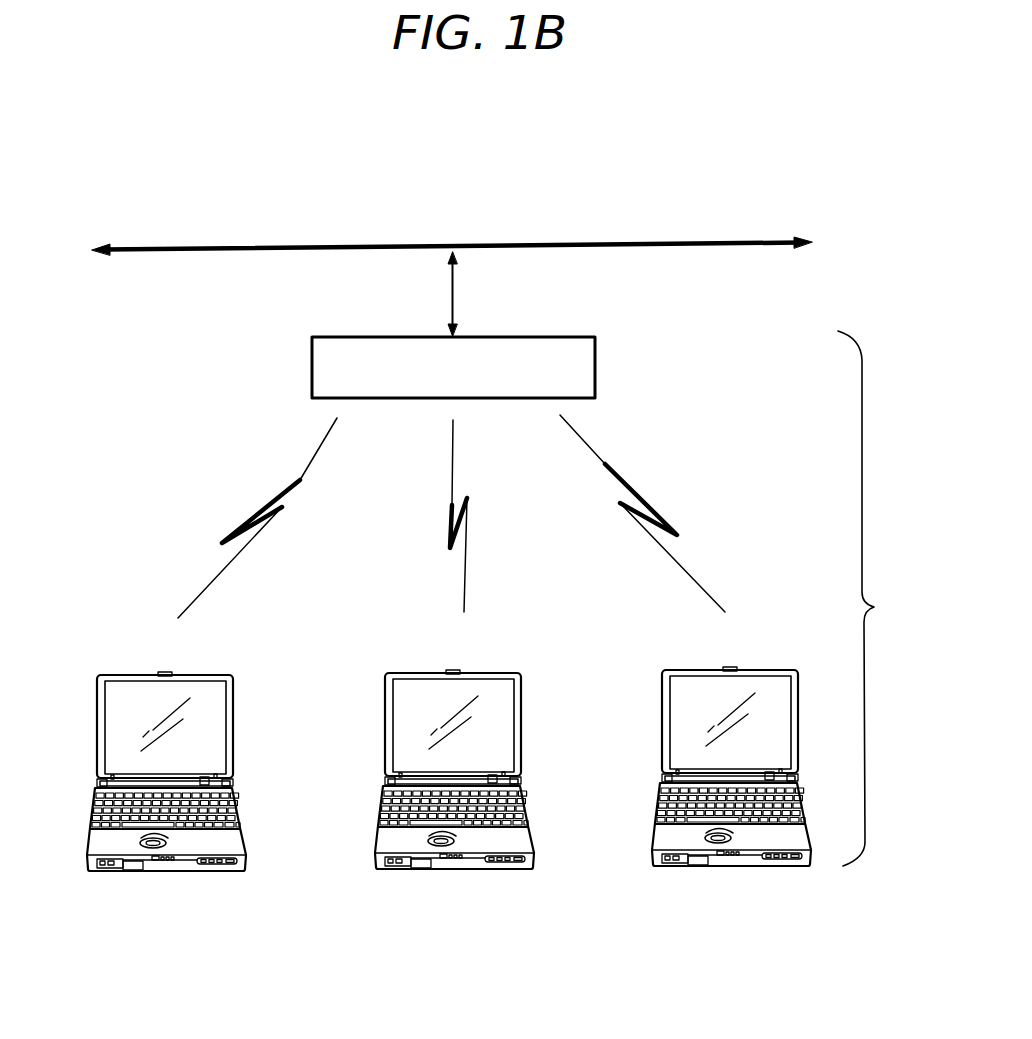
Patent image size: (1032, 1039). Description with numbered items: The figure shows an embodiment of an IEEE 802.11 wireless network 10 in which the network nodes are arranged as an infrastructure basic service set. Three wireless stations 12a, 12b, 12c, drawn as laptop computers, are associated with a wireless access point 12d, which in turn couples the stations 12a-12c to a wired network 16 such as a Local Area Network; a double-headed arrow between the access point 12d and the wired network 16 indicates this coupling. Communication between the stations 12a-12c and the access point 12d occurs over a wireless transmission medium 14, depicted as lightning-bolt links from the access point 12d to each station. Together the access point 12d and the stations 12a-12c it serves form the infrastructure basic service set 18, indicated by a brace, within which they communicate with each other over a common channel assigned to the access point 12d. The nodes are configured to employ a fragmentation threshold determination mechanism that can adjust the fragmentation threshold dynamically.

The wireless network 10 is at (673, 133).
The station 12a is at (98, 720).
The station 12b is at (386, 718).
The station 12c is at (663, 715).
The wireless access point 12d is at (596, 366).
The wireless transmission medium 14 is at (617, 470).
The wired network 16 is at (713, 243).
The infrastructure basic service set 18 is at (478, 601).